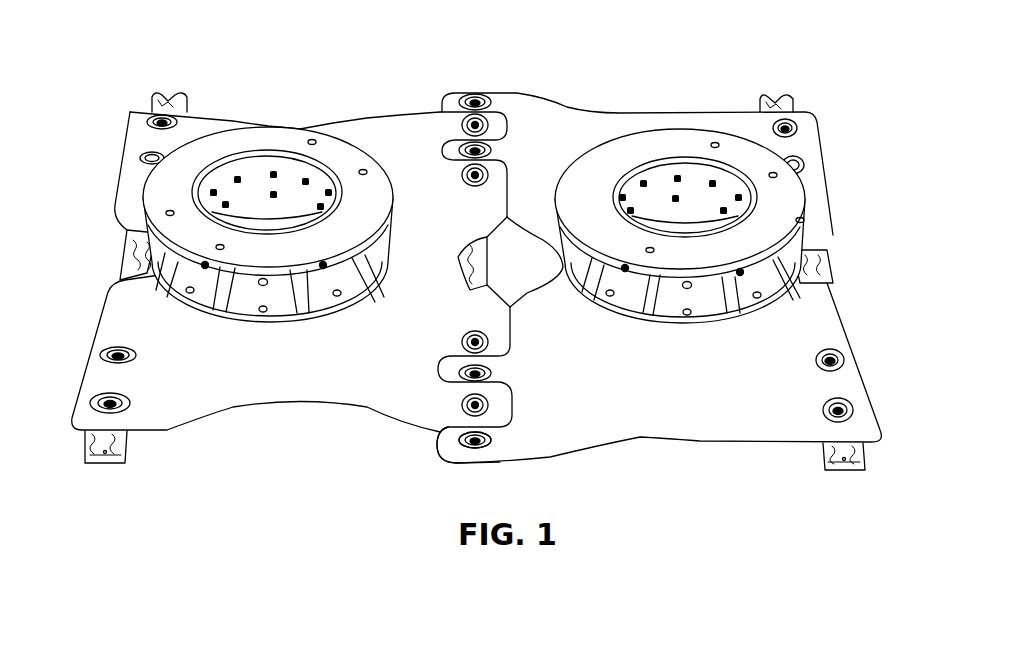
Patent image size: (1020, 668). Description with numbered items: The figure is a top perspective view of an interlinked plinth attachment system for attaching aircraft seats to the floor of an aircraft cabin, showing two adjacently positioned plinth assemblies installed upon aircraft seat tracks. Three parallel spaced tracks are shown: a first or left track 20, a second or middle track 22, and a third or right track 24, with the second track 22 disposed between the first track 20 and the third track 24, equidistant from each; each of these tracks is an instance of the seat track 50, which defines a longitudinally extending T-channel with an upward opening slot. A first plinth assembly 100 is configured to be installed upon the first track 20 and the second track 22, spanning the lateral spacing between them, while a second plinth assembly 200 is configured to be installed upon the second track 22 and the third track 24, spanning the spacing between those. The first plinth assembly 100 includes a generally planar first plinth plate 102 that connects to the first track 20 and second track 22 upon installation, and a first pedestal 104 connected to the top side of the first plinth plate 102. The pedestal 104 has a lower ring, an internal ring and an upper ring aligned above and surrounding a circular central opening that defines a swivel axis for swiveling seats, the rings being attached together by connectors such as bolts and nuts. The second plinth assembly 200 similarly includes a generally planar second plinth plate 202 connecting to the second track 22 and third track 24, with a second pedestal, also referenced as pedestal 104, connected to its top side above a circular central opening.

The seat track 50 is at (467, 276).
The first plinth assembly 100 is at (292, 298).
The second plinth assembly 200 is at (659, 301).
The first plinth plate 102 is at (403, 135).
The second plinth plate 202 is at (585, 128).
The pedestal 104 is at (120, 203).
The first track 20 is at (85, 447).
The second track 22 is at (462, 465).
The third track 24 is at (828, 465).